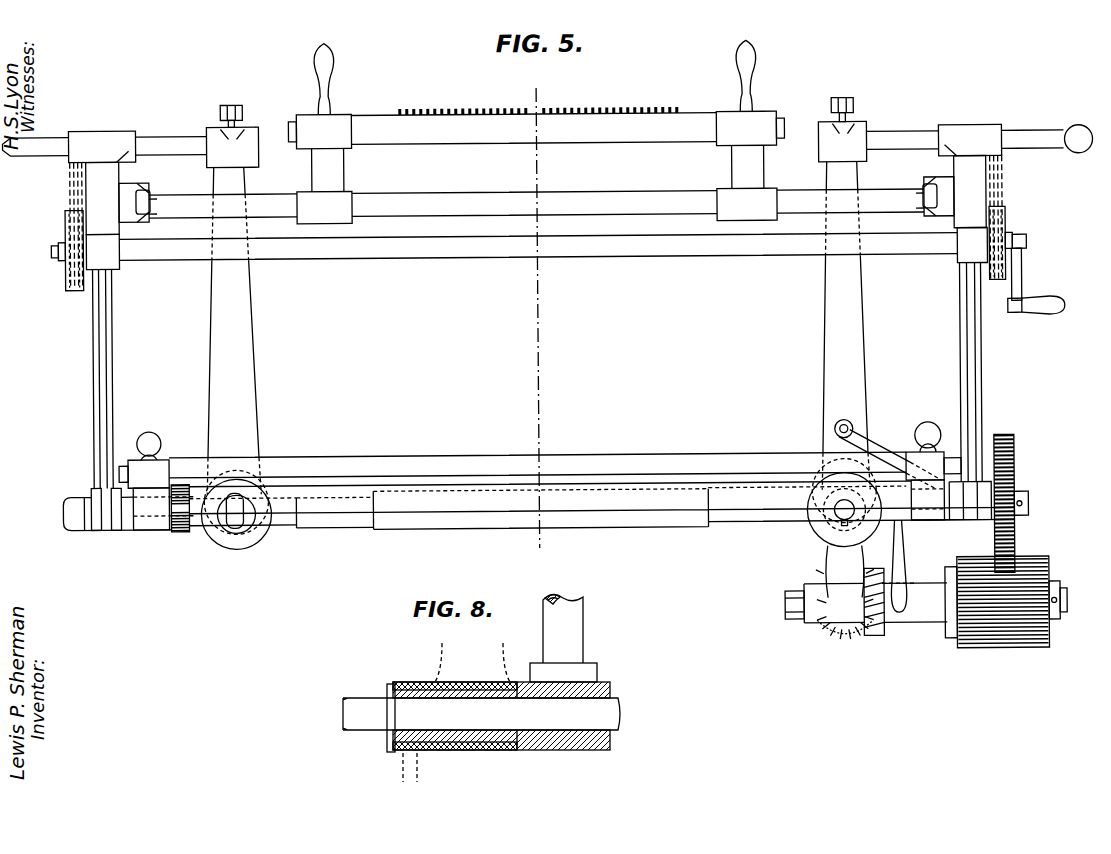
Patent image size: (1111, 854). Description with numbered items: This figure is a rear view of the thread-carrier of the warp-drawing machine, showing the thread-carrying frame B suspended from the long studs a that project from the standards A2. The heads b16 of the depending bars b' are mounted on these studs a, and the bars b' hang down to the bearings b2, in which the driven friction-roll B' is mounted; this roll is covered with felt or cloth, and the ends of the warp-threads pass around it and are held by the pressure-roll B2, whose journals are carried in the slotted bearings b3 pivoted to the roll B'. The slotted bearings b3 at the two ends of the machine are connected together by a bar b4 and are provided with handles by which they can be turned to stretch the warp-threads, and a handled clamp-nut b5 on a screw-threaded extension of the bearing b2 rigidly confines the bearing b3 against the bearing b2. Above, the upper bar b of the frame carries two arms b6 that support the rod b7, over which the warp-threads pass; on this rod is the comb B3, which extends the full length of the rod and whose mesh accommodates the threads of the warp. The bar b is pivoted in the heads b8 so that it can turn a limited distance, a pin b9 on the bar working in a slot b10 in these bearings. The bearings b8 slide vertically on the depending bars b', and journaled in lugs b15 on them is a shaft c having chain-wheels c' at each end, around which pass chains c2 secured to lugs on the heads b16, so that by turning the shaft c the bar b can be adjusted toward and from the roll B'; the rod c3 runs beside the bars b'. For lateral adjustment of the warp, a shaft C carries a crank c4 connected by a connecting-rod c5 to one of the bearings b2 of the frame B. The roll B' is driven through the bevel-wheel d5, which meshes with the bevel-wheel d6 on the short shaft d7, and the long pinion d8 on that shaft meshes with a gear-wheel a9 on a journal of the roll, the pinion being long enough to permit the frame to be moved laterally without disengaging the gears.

In FIG. 5, the thread-carrying frame B is at (429, 294).
In FIG. 5, the comb B3 is at (538, 100).
In FIG. 5, the rod b7 is at (533, 129).
In FIG. 5, the arms b6 is at (536, 132).
In FIG. 5, the upper bar b is at (536, 204).
In FIG. 5, the shaft c is at (538, 247).
In FIG. 5, the long studs a is at (547, 134).
In FIG. 5, the standards A2 is at (537, 295).
In FIG. 5, the heads b16 is at (534, 148).
In FIG. 5, the heads or bearings b8 is at (536, 194).
In FIG. 5, the pin b9 is at (539, 187).
In FIG. 5, the slot b10 is at (918, 200).
In FIG. 5, the lugs b15 is at (536, 248).
In FIG. 5, the chains c2 is at (537, 222).
In FIG. 5, the chain-wheels c' is at (558, 262).
In FIG. 5, the depending bars b' is at (522, 376).
In FIG. 8, the depending bars b' is at (563, 628).
In FIG. 5, the shaft rod c3 is at (113, 392).
In FIG. 5, the bearings b2 is at (527, 519).
In FIG. 8, the bearings b2 is at (579, 671).
In FIG. 5, the slotted bearings b3 is at (532, 479).
In FIG. 8, the slotted bearings b3 is at (501, 696).
In FIG. 5, the bar b4 is at (537, 466).
In FIG. 5, the pressure-roll B2 is at (359, 508).
In FIG. 5, the driven friction-roll B' is at (621, 508).
In FIG. 8, the driven friction-roll B' is at (481, 714).
In FIG. 5, the shaft C is at (822, 526).
In FIG. 5, the crank c4 is at (884, 454).
In FIG. 5, the connecting-rod c5 is at (928, 451).
In FIG. 5, the handled clamp-nut b5 is at (896, 539).
In FIG. 8, the handled clamp-nut b5 is at (452, 712).
In FIG. 5, the gear wheel a9 is at (1017, 503).
In FIG. 5, the short shaft d7 is at (937, 602).
In FIG. 5, the bevel-wheel d5 is at (845, 613).
In FIG. 5, the bevel-wheel d6 is at (880, 610).
In FIG. 5, the long pinion d8 is at (997, 614).